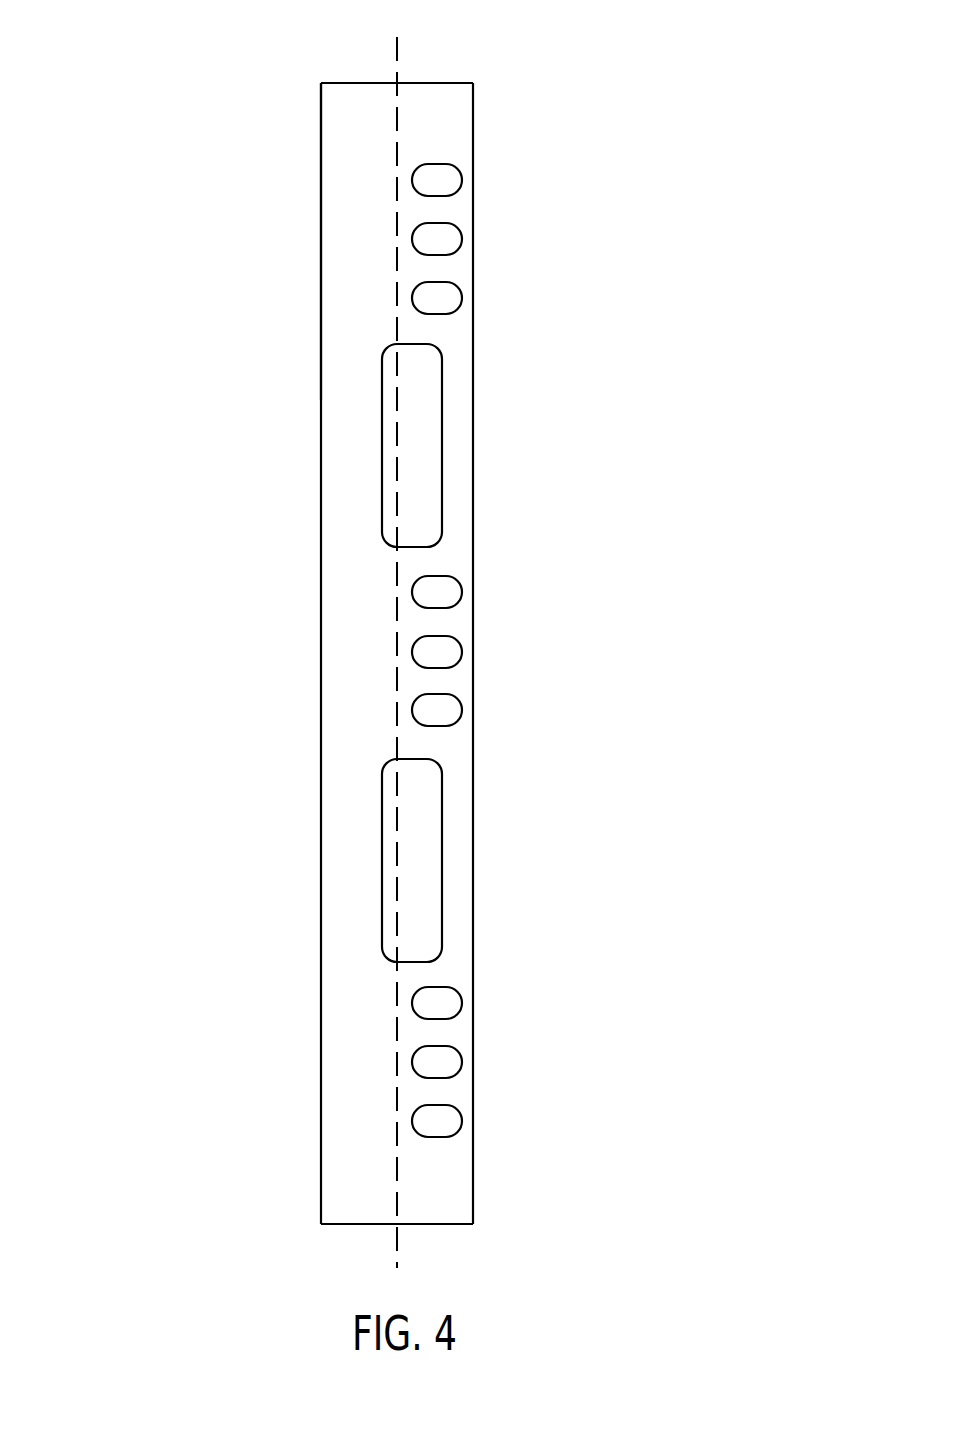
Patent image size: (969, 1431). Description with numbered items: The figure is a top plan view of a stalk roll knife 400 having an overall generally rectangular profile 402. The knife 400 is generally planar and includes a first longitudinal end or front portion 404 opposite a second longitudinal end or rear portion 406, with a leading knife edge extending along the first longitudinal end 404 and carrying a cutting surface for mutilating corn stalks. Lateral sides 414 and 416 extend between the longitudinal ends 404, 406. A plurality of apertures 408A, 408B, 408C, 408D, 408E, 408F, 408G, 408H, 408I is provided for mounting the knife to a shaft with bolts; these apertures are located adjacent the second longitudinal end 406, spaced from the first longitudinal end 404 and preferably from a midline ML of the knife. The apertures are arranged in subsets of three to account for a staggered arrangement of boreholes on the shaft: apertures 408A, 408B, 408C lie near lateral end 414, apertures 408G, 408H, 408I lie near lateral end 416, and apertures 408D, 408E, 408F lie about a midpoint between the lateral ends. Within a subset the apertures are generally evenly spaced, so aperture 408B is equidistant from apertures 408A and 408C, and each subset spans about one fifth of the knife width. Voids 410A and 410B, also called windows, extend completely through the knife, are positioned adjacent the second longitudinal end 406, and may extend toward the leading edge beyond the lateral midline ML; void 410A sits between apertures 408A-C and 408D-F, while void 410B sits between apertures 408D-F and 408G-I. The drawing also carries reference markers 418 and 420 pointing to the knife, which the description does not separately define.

The stalk roll knife 400 is at (317, 655).
The generally rectangular profile 402 is at (384, 655).
The first longitudinal end 404 is at (320, 1172).
The second longitudinal end 406 is at (473, 1205).
The aperture 408A is at (462, 180).
The aperture 408B is at (462, 239).
The aperture 408C is at (462, 298).
The aperture 408D is at (462, 592).
The aperture 408E is at (462, 652).
The aperture 408F is at (462, 710).
The aperture 408G is at (462, 1003).
The aperture 408H is at (462, 1062).
The aperture 408I is at (462, 1121).
The void 410A is at (442, 455).
The void 410B is at (442, 862).
The lateral side 414 is at (345, 82).
The lateral side 416 is at (368, 1224).
The first portion 418 is at (320, 286).
The second portion 420 is at (308, 171).
The midline ML is at (399, 113).